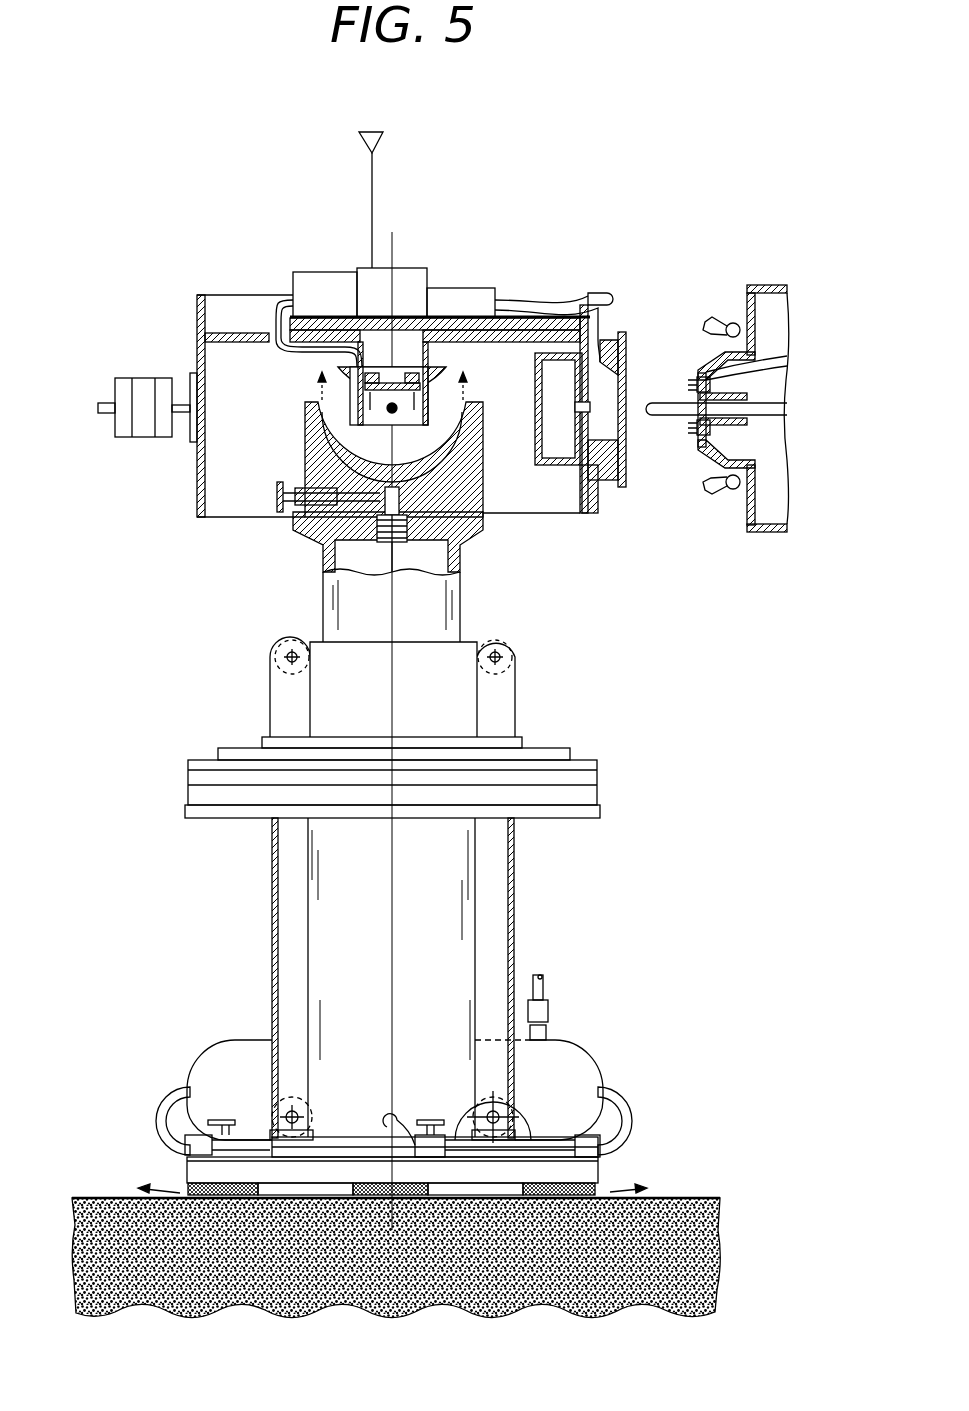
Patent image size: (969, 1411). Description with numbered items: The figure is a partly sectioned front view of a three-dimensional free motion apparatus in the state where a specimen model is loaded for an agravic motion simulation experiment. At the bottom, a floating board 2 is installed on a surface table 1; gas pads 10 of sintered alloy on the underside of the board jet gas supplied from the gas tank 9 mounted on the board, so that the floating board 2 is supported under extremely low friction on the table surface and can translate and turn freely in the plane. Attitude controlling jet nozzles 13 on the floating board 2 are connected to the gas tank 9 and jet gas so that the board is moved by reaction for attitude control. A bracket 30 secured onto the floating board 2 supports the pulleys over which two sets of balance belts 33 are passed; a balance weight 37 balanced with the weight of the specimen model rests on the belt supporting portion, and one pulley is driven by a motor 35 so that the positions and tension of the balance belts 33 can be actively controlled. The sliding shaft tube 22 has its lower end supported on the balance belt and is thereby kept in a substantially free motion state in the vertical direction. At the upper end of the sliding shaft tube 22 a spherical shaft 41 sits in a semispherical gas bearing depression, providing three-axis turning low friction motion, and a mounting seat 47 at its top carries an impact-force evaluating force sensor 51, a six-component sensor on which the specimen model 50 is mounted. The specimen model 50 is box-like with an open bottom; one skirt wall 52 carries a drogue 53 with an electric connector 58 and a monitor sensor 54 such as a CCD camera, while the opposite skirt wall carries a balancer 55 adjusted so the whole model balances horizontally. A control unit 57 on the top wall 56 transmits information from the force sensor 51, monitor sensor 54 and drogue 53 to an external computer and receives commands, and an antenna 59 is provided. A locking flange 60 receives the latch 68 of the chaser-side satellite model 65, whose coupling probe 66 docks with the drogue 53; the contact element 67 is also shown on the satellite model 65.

The surface table 1 is at (158, 1278).
The floating board 2 is at (200, 1172).
The gas tank 9 is at (572, 1070).
The gas pads 10 is at (598, 1187).
The attitude controlling jet nozzles 13 is at (587, 1147).
The sliding shaft tube 22 is at (450, 612).
The bracket 30 is at (465, 937).
The balance belts 33 is at (270, 710).
The motor 35 is at (517, 1090).
The balance weight 37 is at (596, 777).
The spherical shaft 41 is at (480, 445).
The mounting seat 47 is at (453, 490).
The specimen model 50 is at (333, 390).
The impact-force evaluating force sensor 51 is at (302, 518).
The skirt wall 52 is at (197, 490).
The drogue 53 is at (624, 462).
The monitor sensor 54 is at (603, 302).
The balancer 55 is at (142, 430).
The top wall 56 is at (243, 333).
The control unit 57 is at (405, 283).
The electric connector 58 is at (593, 428).
The antenna 59 is at (373, 185).
The locking flange 60 is at (622, 333).
The satellite model 65 is at (779, 280).
The coupling probe 66 is at (660, 405).
The brush contact 67 is at (690, 437).
The latch 68 is at (728, 320).